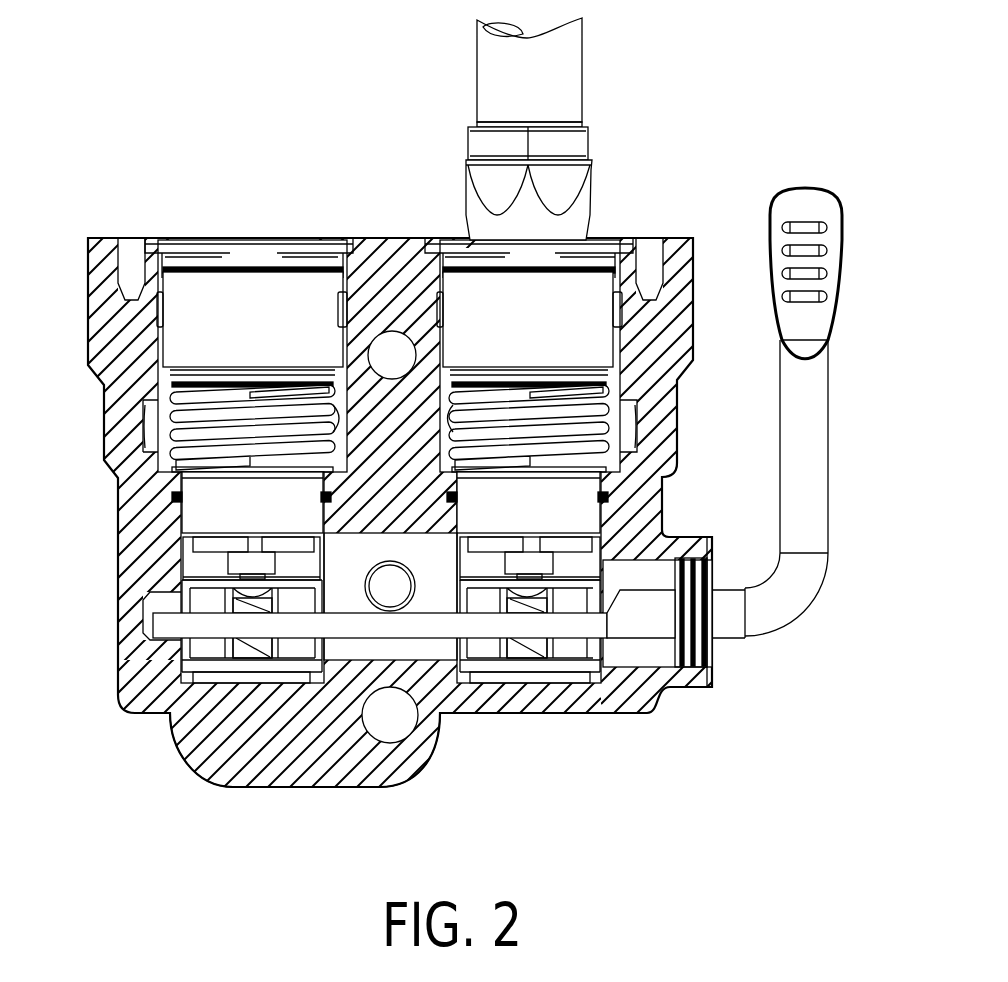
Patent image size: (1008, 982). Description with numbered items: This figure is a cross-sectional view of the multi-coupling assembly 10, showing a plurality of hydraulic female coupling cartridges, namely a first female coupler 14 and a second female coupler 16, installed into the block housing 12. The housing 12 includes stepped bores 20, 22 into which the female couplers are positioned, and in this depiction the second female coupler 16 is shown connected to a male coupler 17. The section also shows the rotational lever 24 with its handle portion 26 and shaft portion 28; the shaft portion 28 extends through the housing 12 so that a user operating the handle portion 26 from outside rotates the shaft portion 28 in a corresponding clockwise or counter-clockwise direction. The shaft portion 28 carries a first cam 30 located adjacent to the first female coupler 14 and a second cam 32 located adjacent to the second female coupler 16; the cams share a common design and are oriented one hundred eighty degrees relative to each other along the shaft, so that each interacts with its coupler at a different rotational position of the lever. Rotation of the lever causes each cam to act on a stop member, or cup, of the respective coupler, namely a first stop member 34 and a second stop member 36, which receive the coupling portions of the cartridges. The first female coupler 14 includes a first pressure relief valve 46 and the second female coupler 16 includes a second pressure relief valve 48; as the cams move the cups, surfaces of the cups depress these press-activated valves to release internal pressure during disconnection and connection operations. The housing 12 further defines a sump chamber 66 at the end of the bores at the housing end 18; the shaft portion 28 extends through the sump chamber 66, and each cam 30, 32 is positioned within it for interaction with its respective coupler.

The multi-coupling assembly 10 is at (148, 97).
The block housing 12 is at (88, 363).
The first female coupler 14 is at (137, 463).
The second female coupler 16 is at (640, 472).
The male coupler 17 is at (583, 75).
The housing end 18 is at (468, 707).
The stepped bore 20 is at (170, 433).
The second stepped bore 22 is at (635, 432).
The rotational lever 24 is at (830, 441).
The handle portion 26 is at (830, 243).
The shaft portion 28 is at (360, 627).
The first cam 30 is at (245, 648).
The second cam 32 is at (520, 648).
The first stop member 34 is at (167, 623).
The second stop member 36 is at (585, 607).
The first pressure relief valve 46 is at (185, 594).
The second pressure relief valve 48 is at (527, 577).
The sump chamber 66 is at (430, 595).